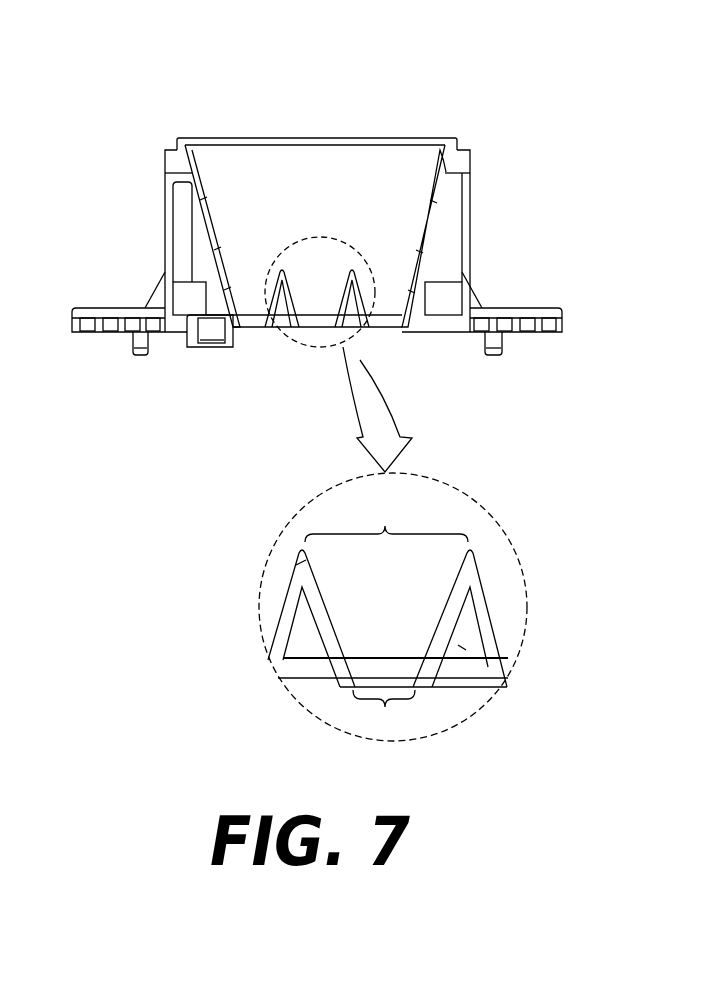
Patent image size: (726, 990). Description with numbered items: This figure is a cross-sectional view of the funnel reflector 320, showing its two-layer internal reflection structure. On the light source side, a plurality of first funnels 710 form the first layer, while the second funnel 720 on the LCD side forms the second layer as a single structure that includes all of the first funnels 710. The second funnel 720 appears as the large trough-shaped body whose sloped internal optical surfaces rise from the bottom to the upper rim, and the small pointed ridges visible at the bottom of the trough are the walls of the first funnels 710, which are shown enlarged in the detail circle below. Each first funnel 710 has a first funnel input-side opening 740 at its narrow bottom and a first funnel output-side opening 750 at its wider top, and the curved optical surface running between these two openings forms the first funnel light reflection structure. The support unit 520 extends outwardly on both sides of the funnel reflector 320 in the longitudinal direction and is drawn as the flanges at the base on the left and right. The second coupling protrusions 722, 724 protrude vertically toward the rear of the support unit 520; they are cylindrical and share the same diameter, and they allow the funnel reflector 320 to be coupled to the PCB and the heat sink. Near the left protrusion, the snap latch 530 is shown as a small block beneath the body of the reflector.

The funnel reflector 320 is at (110, 39).
The second funnel 720 is at (335, 160).
The support unit 520 is at (533, 312).
The second coupling protrusion 722 is at (130, 345).
The second coupling protrusion 724 is at (502, 342).
The snap latch 530 is at (195, 343).
The first funnel 710 is at (313, 308).
The first funnel output-side opening 750 is at (386, 518).
The first funnel input-side opening 740 is at (384, 713).